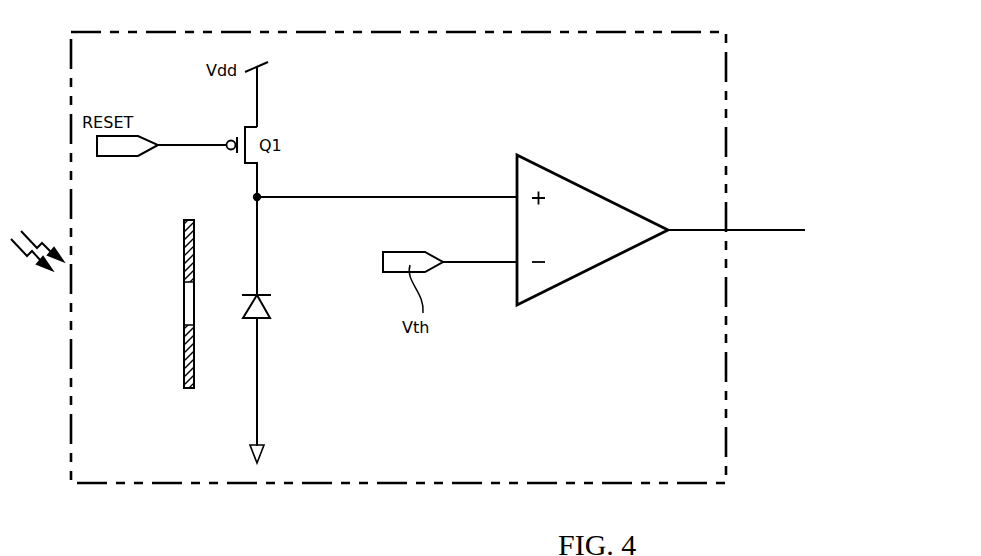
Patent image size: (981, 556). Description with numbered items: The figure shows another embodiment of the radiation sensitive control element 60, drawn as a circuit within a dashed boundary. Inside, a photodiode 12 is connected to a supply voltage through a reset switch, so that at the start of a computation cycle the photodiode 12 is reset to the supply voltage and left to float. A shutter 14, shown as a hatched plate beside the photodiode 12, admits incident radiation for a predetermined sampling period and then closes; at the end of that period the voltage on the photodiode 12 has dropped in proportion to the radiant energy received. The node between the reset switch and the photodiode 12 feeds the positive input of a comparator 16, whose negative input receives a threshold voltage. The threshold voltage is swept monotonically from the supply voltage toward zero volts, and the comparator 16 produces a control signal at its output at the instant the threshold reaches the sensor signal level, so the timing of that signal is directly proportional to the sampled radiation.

The photodiode 12 is at (265, 307).
The shutter 14 is at (184, 365).
The comparator 16 is at (567, 282).
The radiation sensitive control element 60 is at (403, 483).